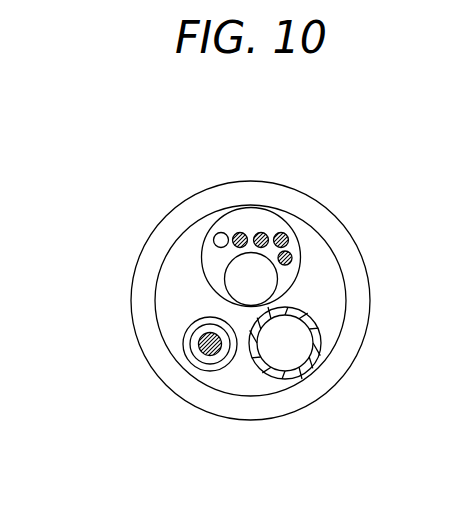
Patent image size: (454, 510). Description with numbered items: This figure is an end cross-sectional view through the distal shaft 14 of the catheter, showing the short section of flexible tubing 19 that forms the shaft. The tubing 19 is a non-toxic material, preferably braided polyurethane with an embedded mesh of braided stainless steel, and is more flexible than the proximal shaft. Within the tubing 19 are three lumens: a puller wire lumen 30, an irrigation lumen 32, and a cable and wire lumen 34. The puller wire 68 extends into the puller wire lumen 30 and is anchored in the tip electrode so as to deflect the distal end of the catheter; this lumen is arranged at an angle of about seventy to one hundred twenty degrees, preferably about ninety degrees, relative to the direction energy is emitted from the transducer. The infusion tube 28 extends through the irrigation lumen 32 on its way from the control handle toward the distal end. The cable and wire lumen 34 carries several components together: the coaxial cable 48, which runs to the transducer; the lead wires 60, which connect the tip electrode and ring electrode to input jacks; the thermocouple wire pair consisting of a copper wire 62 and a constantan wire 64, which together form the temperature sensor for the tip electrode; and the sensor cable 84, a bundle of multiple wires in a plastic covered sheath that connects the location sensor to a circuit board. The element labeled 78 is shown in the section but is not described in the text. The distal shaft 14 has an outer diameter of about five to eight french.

The distal shaft 14 is at (253, 319).
The flexible tubing 19 is at (250, 407).
The infusion tube 28 is at (321, 333).
The puller wire lumen 30 is at (183, 395).
The irrigation lumen 32 is at (272, 397).
The cable and wire lumen 34 is at (251, 222).
The coaxial cable 48 is at (219, 232).
The lead wire 60 is at (292, 254).
The copper wire 62 is at (240, 232).
The constantan wire 64 is at (268, 232).
The puller wire 68 is at (200, 350).
The shield 78 is at (198, 363).
The sensor cable 84 is at (226, 273).